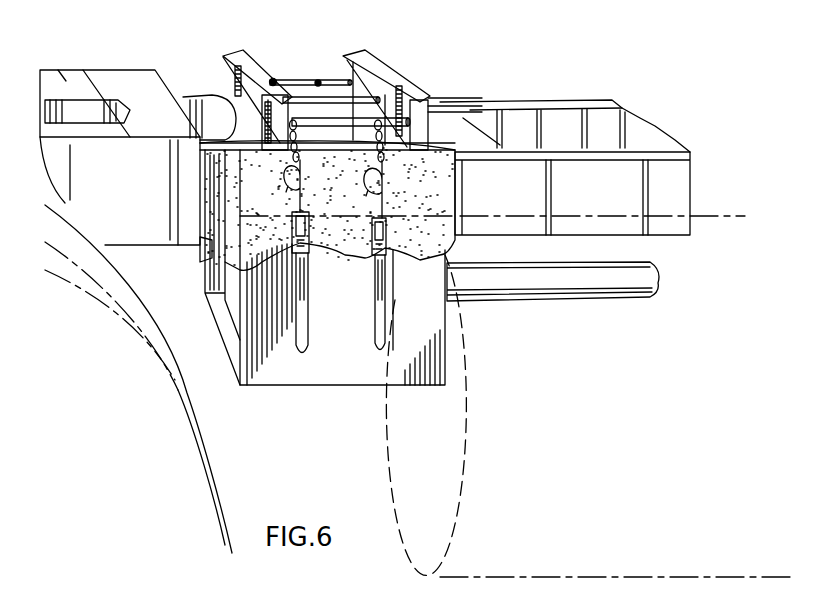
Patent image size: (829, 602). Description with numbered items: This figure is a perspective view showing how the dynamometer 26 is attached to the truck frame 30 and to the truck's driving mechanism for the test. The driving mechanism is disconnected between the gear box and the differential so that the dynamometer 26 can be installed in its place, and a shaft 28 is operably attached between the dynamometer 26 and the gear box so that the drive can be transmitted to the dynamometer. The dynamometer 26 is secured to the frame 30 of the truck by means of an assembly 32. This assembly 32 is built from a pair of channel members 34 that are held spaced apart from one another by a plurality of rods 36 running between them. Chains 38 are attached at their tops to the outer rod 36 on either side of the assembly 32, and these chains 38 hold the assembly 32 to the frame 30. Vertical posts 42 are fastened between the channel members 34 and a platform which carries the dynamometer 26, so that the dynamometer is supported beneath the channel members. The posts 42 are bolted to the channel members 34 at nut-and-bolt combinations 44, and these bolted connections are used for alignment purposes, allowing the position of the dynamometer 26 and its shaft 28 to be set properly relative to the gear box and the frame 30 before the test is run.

The dynamometer 26 is at (213, 290).
The shaft 28 is at (529, 282).
The frame 30 is at (520, 100).
The assembly 32 is at (390, 57).
The channel members 34 is at (236, 56).
The rods 36 is at (338, 127).
The chains 38 is at (318, 80).
The vertical posts 42 is at (235, 123).
The nut-and-bolt combinations 44 is at (238, 80).